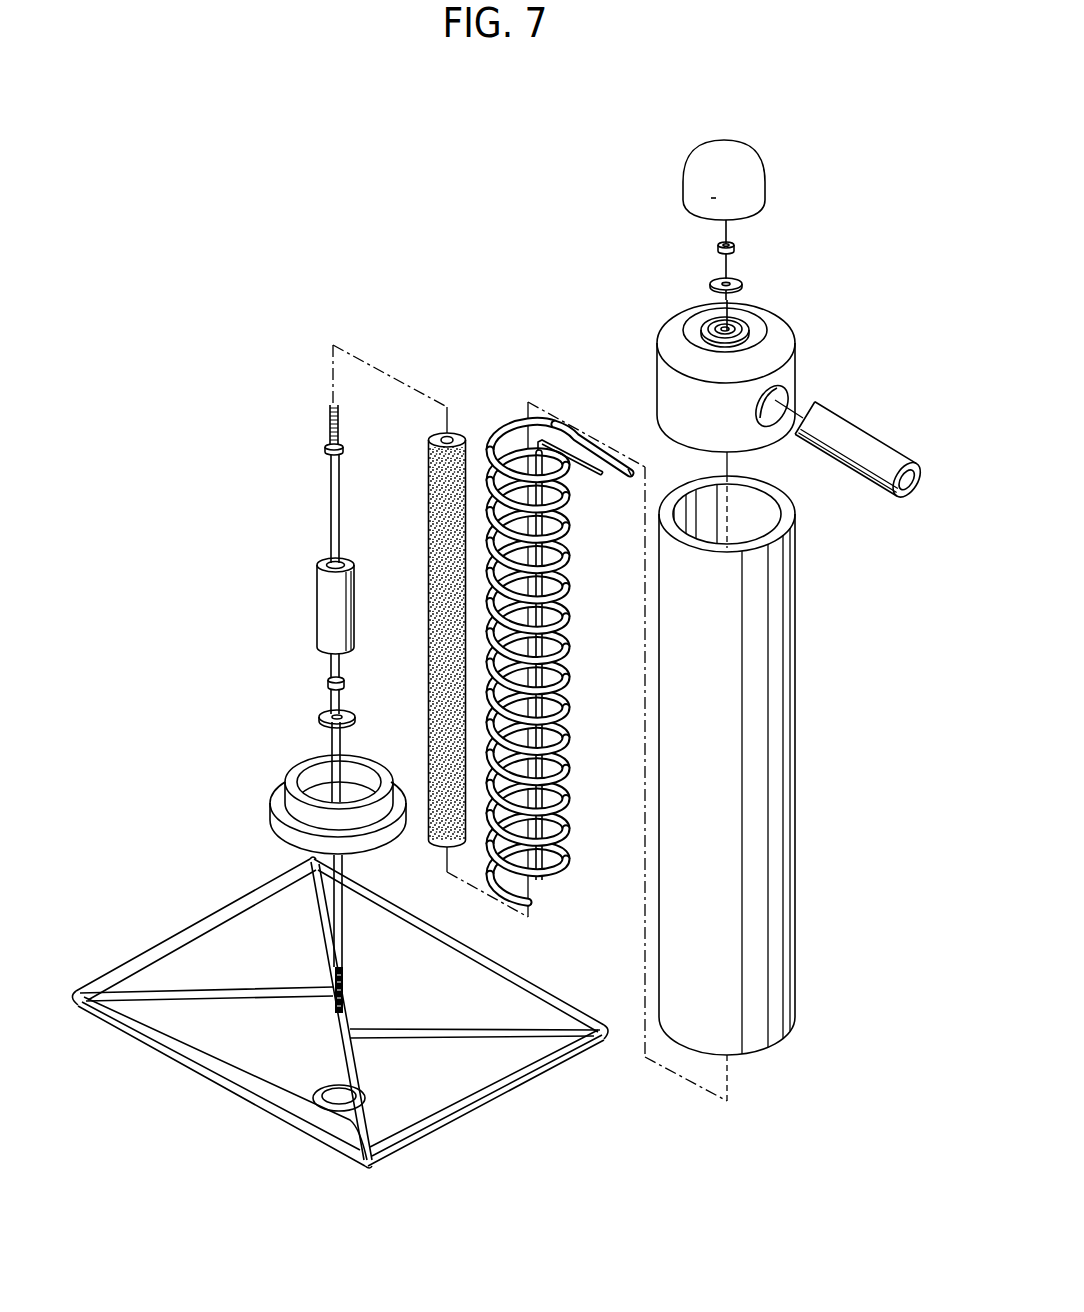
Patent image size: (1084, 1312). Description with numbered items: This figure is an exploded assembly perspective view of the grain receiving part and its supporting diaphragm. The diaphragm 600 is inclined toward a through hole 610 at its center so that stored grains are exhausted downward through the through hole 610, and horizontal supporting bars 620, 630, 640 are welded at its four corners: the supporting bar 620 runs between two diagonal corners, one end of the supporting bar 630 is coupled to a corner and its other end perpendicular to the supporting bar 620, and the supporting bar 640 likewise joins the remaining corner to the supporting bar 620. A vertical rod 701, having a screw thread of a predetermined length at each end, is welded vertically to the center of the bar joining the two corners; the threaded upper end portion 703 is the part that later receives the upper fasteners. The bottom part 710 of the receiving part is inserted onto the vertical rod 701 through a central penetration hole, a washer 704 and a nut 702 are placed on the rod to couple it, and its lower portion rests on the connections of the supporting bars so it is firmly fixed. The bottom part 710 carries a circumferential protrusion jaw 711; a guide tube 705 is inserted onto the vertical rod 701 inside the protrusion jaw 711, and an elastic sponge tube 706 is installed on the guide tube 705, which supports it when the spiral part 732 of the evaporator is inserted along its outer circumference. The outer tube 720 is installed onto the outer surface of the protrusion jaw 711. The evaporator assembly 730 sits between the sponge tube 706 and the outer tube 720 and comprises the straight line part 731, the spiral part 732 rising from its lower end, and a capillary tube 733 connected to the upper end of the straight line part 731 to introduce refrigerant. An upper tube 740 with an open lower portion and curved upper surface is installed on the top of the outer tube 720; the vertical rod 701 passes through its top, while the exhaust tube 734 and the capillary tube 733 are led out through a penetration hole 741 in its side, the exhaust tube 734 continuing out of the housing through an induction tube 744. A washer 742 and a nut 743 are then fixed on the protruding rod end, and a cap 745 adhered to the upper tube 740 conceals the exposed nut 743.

The diaphragm 600 is at (340, 1026).
The through hole 610 is at (337, 1103).
The supporting bar 620 is at (318, 912).
The supporting bar 630 is at (177, 997).
The supporting bar 640 is at (470, 1032).
The vertical rod 701 is at (331, 483).
The nut 702 is at (327, 683).
The threaded screw 703 is at (330, 430).
The washer 704 is at (320, 718).
The guide tube 705 is at (318, 600).
The sponge tube 706 is at (432, 528).
The bottom part 710 is at (278, 808).
The protrusion jaw 711 is at (296, 773).
The outer tube 720 is at (776, 770).
The spring assembly 730 is at (565, 664).
The straight line part 731 is at (542, 828).
The spiral part 732 is at (565, 661).
The capillary tube 733 is at (597, 446).
The exhaust tube 734 is at (563, 430).
The upper tube 740 is at (772, 353).
The penetration hole 741 is at (765, 398).
The washer 742 is at (707, 285).
The nut 743 is at (719, 248).
The induction tube 744 is at (867, 435).
The cap 745 is at (722, 198).